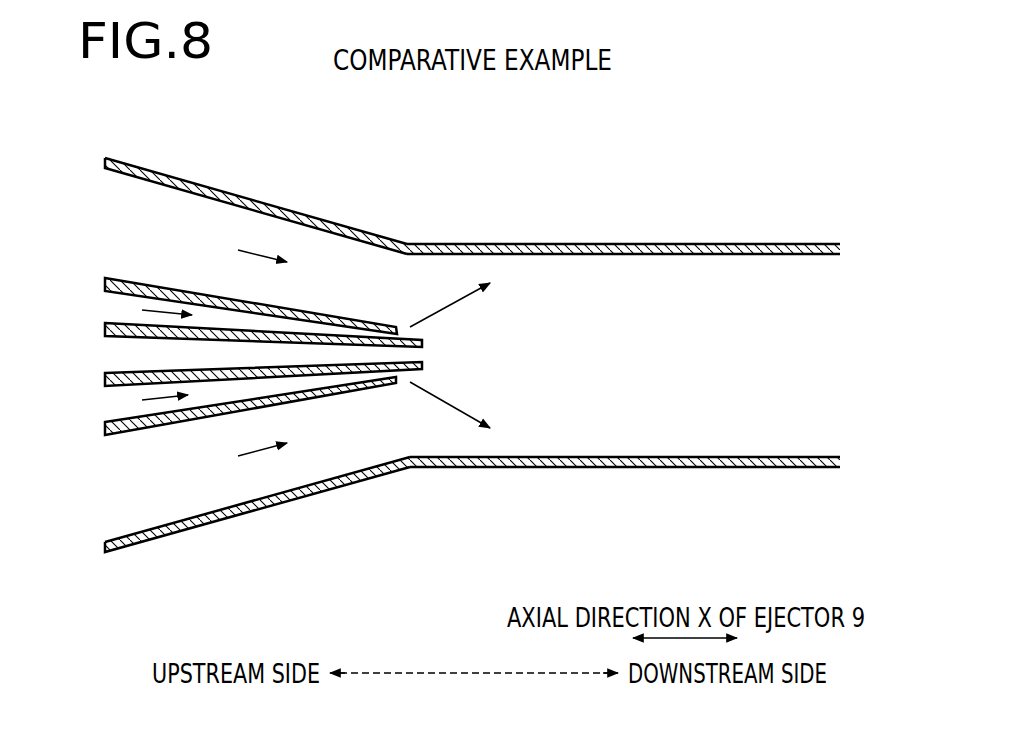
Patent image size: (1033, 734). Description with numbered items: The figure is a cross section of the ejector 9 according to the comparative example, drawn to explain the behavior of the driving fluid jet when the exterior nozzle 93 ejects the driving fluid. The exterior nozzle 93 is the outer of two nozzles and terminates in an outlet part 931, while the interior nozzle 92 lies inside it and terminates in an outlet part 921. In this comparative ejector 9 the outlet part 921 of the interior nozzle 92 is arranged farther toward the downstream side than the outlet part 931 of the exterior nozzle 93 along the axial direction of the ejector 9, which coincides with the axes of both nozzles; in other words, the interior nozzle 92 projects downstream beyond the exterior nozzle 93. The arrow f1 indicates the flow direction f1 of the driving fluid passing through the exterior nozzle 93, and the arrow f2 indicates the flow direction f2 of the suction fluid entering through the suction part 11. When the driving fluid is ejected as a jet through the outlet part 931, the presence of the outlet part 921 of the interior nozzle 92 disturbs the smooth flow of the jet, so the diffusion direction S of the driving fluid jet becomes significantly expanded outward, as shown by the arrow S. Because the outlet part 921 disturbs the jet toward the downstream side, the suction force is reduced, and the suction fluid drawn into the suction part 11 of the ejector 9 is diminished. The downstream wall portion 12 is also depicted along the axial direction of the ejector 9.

The ejector 9 is at (546, 200).
The exterior nozzle 93 is at (294, 216).
The outlet part of the exterior nozzle 931 is at (402, 328).
The interior nozzle 92 is at (320, 430).
The outlet part of the interior nozzle 921 is at (424, 364).
The suction part 11 is at (207, 488).
The mixing section wall 12 is at (717, 397).
The flow direction of the driving fluid f1 is at (138, 335).
The flow direction of the suction fluid f2 is at (268, 448).
The diffusion direction of the driving fluid jet S is at (435, 398).